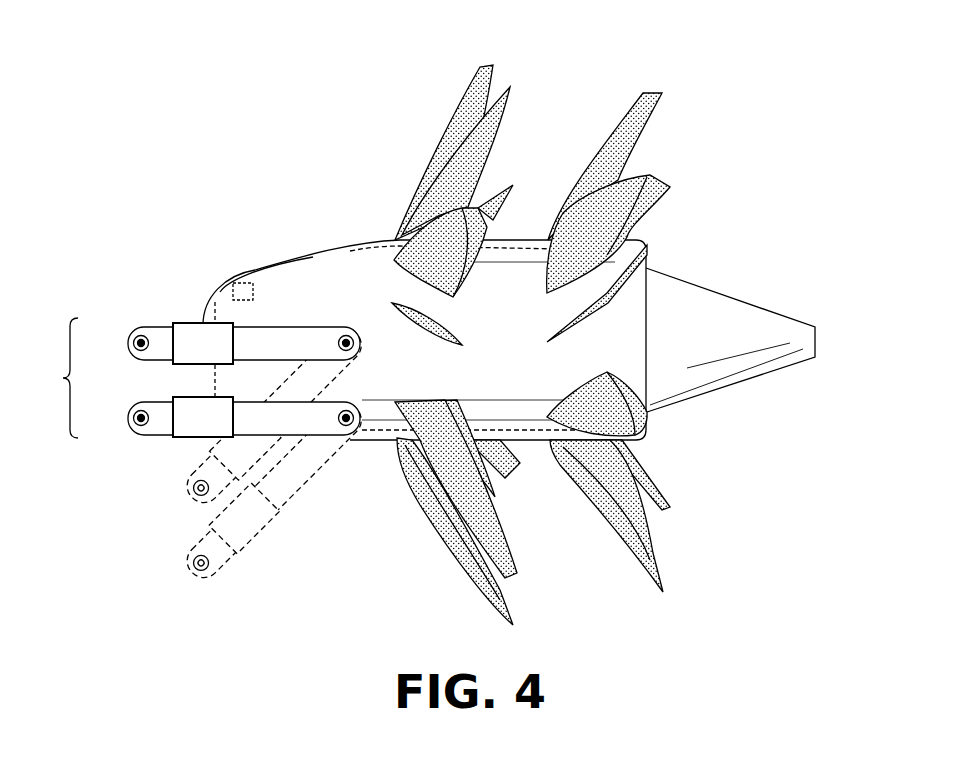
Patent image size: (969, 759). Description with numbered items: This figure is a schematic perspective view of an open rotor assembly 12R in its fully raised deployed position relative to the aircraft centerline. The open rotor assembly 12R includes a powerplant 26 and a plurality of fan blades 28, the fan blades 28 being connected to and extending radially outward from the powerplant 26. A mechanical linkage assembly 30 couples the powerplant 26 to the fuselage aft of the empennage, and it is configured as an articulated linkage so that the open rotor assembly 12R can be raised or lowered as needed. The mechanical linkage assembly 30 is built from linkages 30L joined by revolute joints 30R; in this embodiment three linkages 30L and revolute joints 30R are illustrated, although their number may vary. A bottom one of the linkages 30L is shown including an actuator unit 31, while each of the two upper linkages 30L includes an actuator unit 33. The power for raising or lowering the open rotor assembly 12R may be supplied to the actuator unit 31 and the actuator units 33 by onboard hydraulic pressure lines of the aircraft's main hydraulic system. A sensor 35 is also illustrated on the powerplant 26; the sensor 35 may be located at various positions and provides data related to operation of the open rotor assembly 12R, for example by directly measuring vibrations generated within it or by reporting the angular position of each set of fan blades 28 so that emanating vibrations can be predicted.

The open rotor assembly 12R is at (726, 121).
The powerplant 26 is at (294, 308).
The fan blades 28 is at (437, 133).
The mechanical linkage assembly 30 is at (53, 378).
The linkages 30L is at (163, 327).
The revolute joints 30R is at (133, 338).
The actuator unit 31 is at (253, 555).
The actuator unit 33 is at (195, 323).
The sensor 35 is at (245, 283).